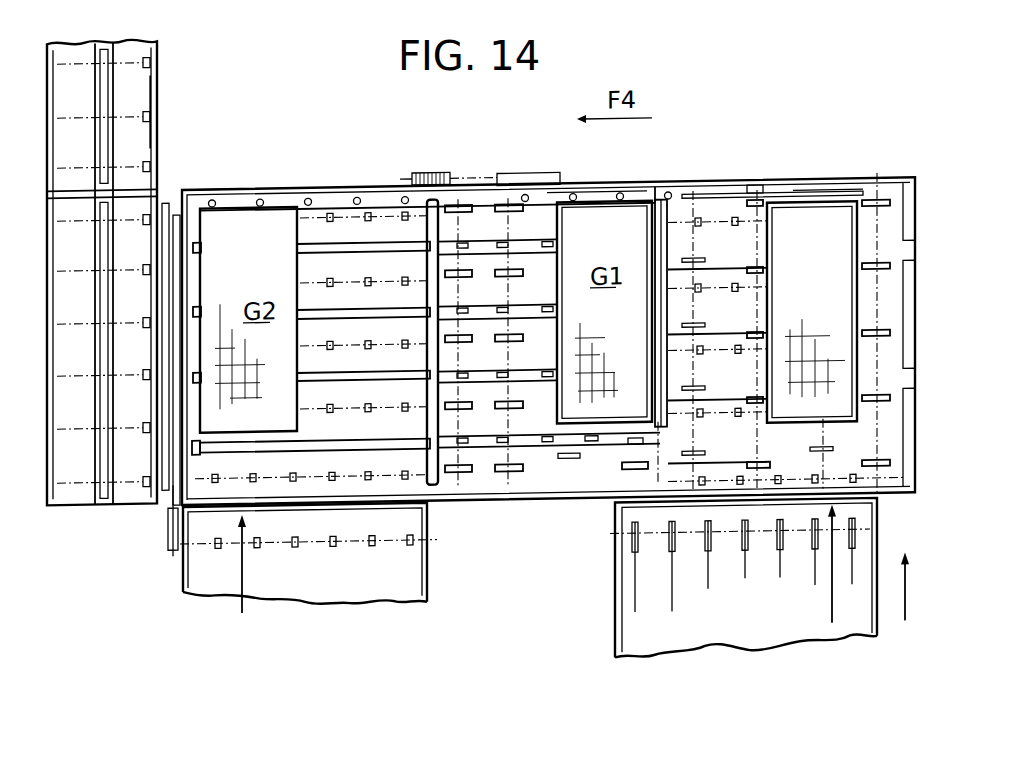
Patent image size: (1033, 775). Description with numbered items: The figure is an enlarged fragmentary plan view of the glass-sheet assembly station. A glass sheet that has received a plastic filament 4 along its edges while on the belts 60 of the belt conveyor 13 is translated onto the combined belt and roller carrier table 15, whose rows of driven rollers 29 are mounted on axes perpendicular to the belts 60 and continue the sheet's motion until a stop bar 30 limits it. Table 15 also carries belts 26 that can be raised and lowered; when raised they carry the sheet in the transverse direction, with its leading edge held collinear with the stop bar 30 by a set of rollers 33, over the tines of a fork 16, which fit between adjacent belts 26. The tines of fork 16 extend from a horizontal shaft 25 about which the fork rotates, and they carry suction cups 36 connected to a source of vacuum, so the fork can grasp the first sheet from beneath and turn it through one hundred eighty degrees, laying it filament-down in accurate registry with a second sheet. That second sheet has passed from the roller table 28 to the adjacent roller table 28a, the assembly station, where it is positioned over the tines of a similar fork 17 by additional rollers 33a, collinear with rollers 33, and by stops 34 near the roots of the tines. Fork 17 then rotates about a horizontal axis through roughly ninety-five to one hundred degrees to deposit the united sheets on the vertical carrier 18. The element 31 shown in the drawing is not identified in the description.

The filament 4 is at (607, 214).
The belt conveyor 13 is at (886, 535).
The combined belt and roller carrier table 15 is at (751, 182).
The fork 16 is at (478, 247).
The fork 17 is at (340, 246).
The vertical carrier 18 is at (162, 96).
The horizontal shaft 25 is at (422, 197).
The belts 26 is at (533, 214).
The roller conveyor or table 28 is at (332, 607).
The roller table 28a is at (225, 181).
The driven rollers 29 is at (738, 302).
The stop bar 30 is at (799, 206).
The post 31 is at (663, 246).
The rollers 33 is at (620, 205).
The rollers 33a is at (214, 201).
The stops 34 is at (203, 250).
The suction cups 36 is at (508, 315).
The belts 60 is at (632, 578).